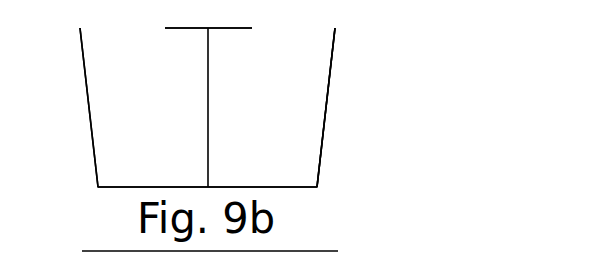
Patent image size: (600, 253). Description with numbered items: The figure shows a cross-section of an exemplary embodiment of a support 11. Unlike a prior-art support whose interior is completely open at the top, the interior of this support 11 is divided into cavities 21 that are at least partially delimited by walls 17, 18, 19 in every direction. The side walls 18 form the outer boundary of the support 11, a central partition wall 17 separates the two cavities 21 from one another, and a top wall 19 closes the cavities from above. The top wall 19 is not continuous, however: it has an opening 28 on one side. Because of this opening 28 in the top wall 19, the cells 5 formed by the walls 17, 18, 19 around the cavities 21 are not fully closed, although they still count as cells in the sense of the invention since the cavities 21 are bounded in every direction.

The support 11 is at (391, 63).
The wall 18 is at (82, 44).
The cell 5 is at (310, 124).
The wall 17 is at (208, 127).
The top wall 19 is at (232, 30).
The opening 28 is at (307, 32).
The cavity 21 is at (168, 163).